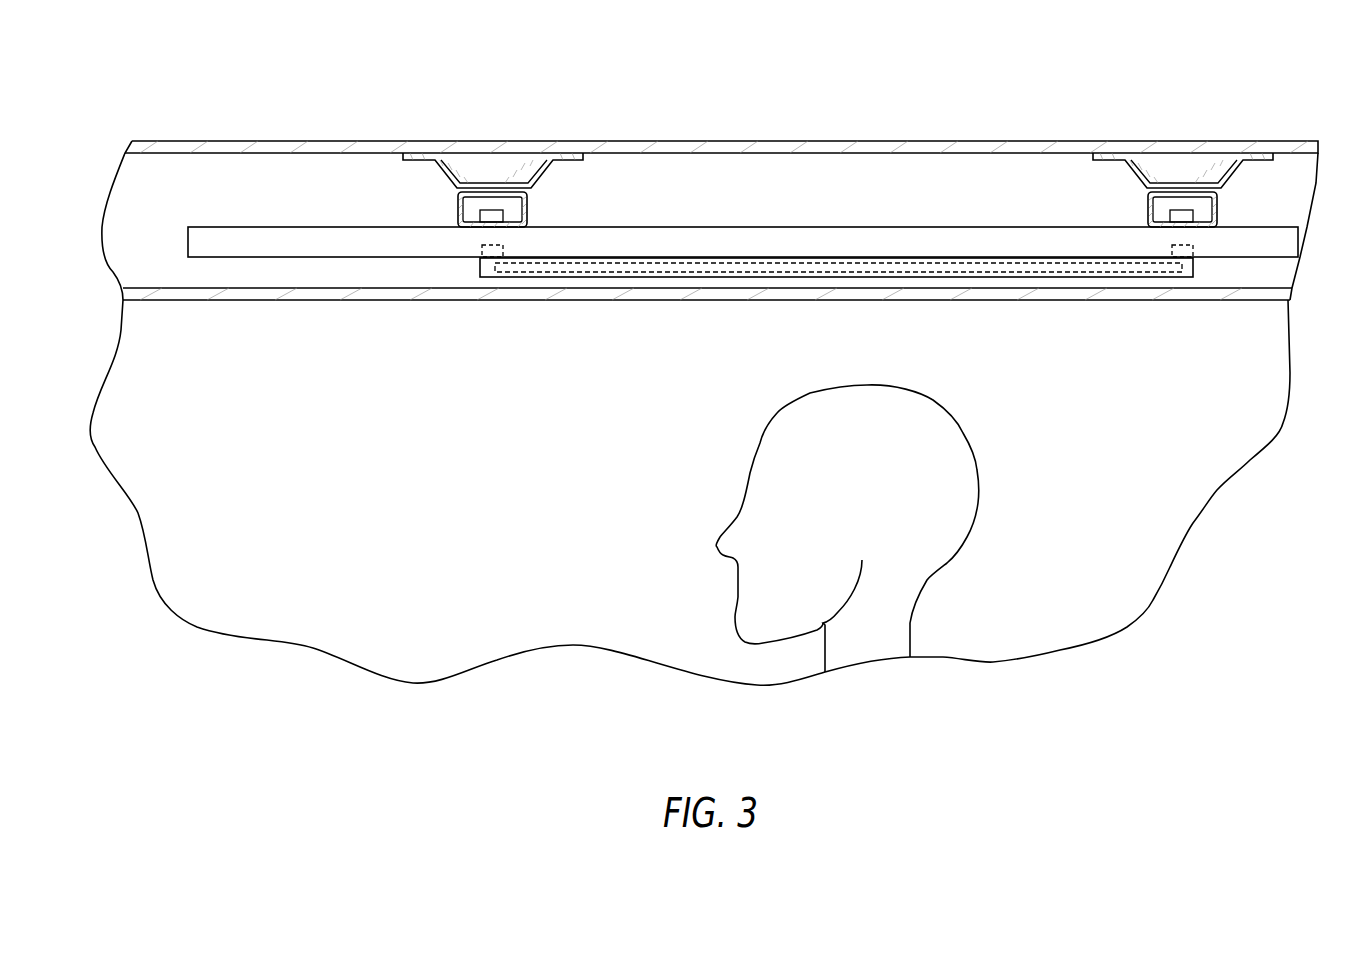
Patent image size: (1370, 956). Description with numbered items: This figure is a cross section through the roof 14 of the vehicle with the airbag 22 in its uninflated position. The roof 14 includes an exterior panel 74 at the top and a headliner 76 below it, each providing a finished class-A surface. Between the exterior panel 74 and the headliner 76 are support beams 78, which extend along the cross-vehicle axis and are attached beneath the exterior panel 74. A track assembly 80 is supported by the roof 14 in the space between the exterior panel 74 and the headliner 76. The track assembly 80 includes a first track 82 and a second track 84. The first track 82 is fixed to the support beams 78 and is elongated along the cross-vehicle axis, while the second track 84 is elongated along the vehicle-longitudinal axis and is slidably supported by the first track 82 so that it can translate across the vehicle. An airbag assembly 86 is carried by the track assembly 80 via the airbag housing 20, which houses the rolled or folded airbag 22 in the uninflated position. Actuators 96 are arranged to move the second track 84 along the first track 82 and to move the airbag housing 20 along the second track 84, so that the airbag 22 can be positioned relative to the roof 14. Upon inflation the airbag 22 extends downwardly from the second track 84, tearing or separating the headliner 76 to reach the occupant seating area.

The roof 14 is at (1061, 90).
The airbag housing 20 is at (482, 268).
The airbag 22 is at (580, 273).
The exterior panel 74 is at (937, 141).
The headliner 76 is at (1157, 300).
The support beams 78 is at (543, 177).
The track assembly 80 is at (797, 222).
The first track 82 is at (458, 205).
The second track 84 is at (272, 227).
The airbag assembly 86 is at (1203, 269).
The actuators 96 is at (491, 212).